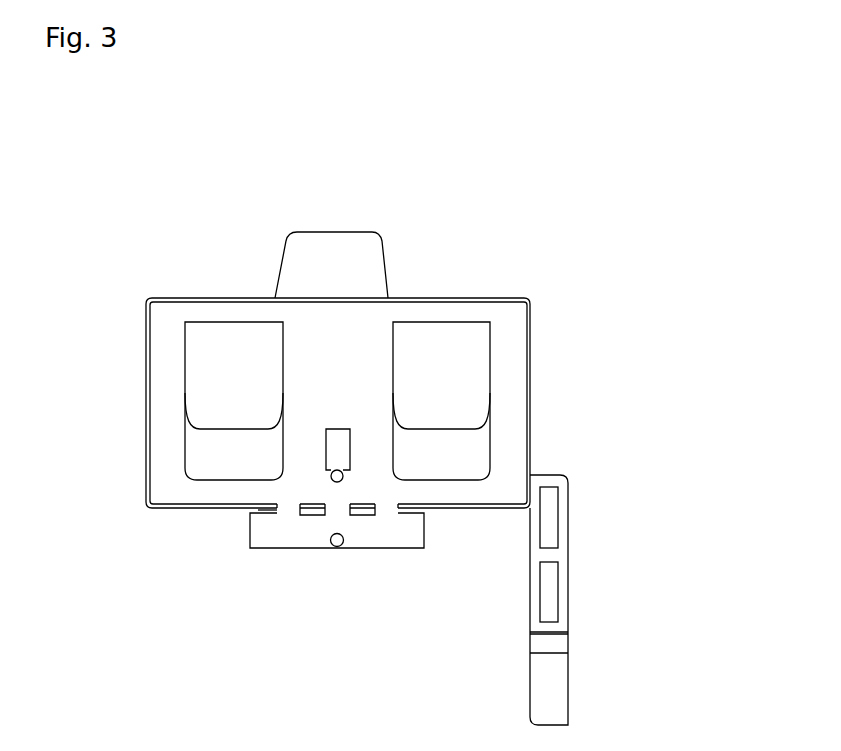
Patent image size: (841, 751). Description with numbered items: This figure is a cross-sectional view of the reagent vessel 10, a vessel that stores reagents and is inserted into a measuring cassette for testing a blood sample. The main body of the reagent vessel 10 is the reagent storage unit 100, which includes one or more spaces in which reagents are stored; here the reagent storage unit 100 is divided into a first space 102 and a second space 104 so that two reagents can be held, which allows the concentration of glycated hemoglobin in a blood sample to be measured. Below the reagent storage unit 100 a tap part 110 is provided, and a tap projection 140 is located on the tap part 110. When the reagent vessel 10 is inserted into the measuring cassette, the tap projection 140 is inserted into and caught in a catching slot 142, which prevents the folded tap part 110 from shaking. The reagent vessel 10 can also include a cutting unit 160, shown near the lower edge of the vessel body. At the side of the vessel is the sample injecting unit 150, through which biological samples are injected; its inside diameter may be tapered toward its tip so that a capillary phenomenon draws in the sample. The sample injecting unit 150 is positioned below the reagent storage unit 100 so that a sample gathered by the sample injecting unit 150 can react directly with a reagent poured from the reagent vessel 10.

The reagent vessel 10 is at (524, 213).
The reagent storage unit 100 is at (344, 288).
The first space 102 is at (465, 360).
The second space 104 is at (215, 363).
The tap part 110 is at (382, 535).
The tap projection 140 is at (332, 546).
The catching slot 142 is at (336, 470).
The sample injecting unit 150 is at (560, 558).
The cutting unit 160 is at (258, 510).